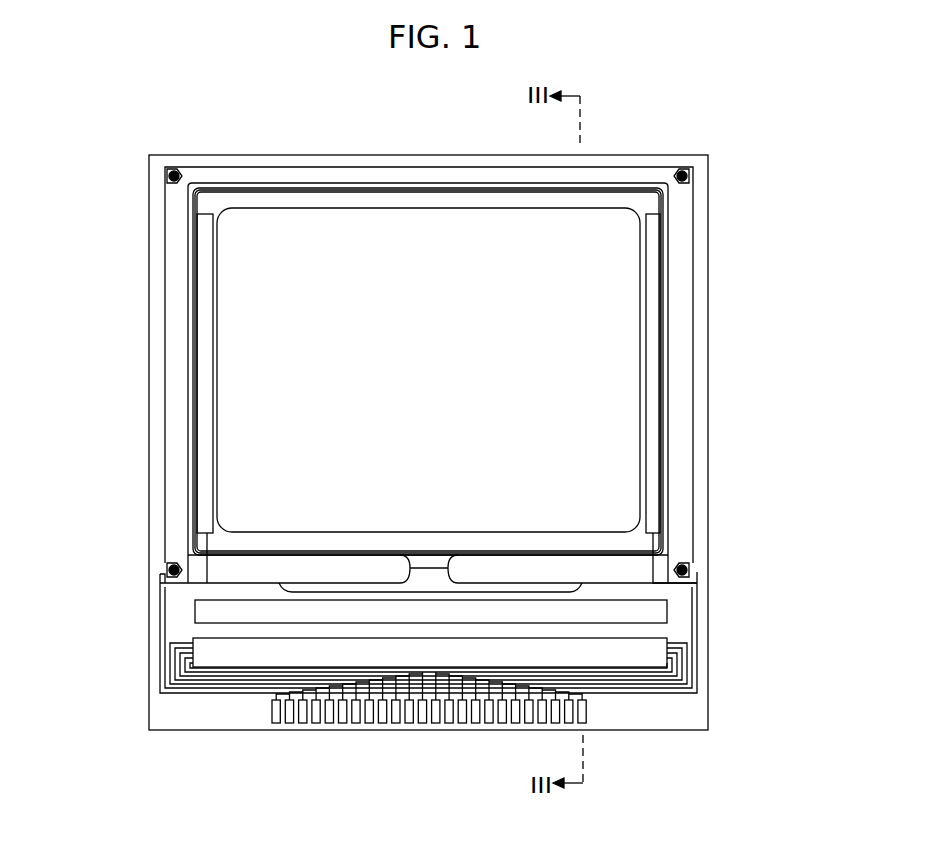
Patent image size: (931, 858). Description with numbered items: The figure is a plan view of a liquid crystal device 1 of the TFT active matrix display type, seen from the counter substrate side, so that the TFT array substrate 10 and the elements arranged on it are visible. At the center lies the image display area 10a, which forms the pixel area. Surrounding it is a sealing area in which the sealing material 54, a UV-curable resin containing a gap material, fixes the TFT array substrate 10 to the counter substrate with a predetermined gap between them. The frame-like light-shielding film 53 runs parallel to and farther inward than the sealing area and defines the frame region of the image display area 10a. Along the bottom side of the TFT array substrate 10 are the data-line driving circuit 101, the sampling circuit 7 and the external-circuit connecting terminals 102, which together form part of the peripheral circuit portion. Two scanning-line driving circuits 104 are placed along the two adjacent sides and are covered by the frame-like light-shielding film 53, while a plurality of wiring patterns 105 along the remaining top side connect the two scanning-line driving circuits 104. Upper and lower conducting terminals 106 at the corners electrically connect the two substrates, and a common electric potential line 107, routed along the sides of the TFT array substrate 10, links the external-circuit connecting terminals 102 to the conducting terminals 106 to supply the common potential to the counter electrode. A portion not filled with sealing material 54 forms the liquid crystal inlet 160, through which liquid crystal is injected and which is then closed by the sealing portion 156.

The liquid crystal device 1 is at (668, 100).
The TFT array substrate 10 is at (266, 162).
The image display area 10a is at (256, 328).
The wiring patterns 105 is at (340, 190).
The scanning-line driving circuits 104 is at (203, 408).
The upper and lower conducting terminals 106 is at (186, 172).
The sealing material 54 is at (688, 306).
The frame-like light-shielding film 53 is at (660, 541).
The sealing portion 156 is at (278, 583).
The common electric potential line 107 is at (160, 682).
The sampling circuit 7 is at (655, 615).
The data-line driving circuit 101 is at (215, 656).
The external-circuit connecting terminals 102 is at (375, 718).
The liquid crystal inlet 160 is at (430, 565).